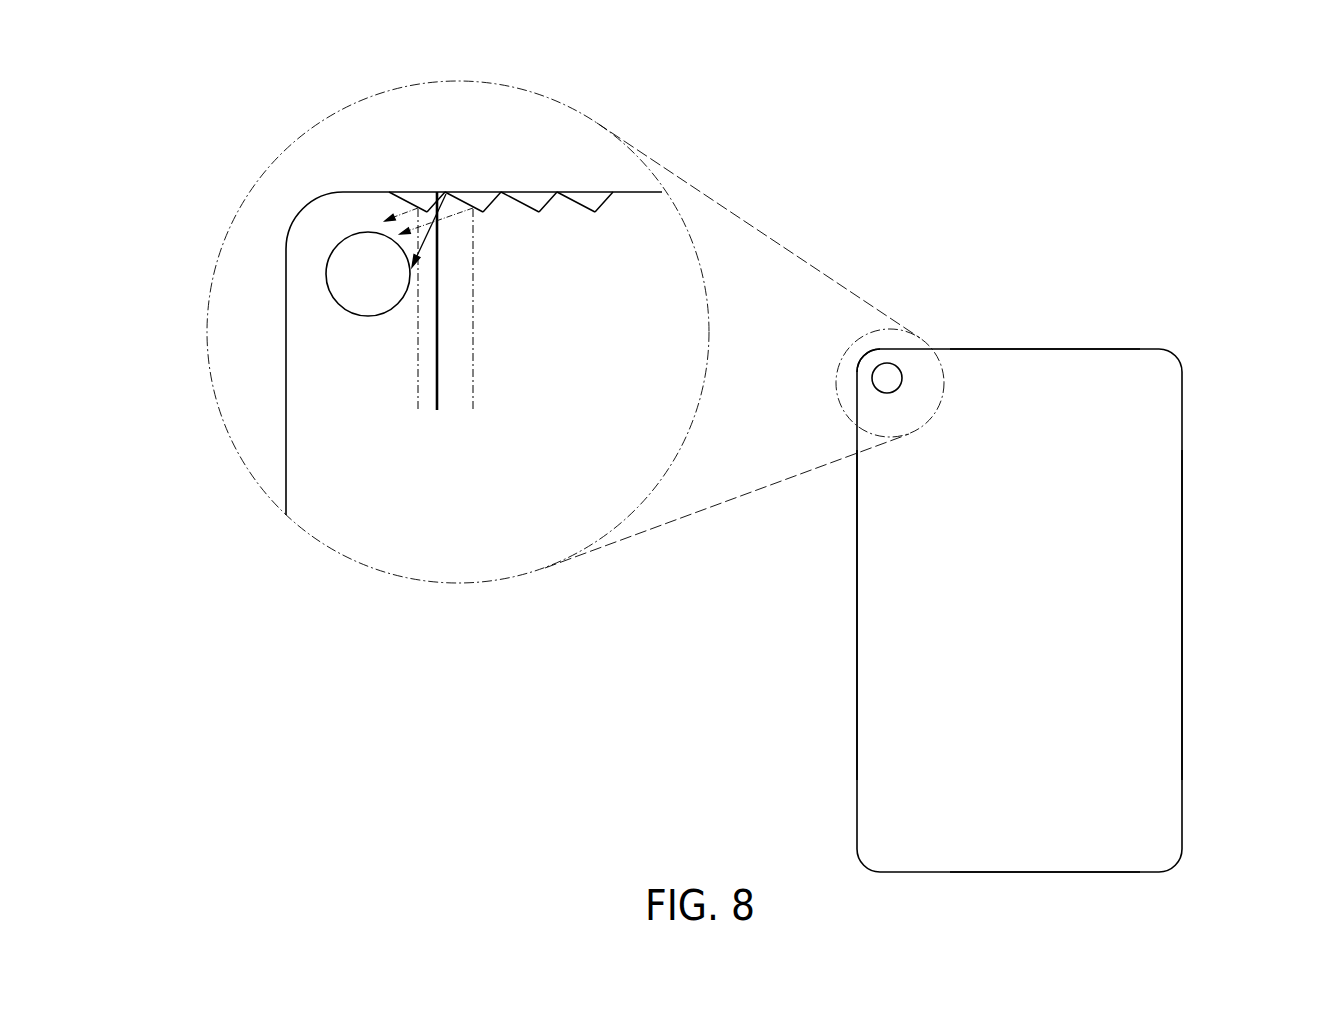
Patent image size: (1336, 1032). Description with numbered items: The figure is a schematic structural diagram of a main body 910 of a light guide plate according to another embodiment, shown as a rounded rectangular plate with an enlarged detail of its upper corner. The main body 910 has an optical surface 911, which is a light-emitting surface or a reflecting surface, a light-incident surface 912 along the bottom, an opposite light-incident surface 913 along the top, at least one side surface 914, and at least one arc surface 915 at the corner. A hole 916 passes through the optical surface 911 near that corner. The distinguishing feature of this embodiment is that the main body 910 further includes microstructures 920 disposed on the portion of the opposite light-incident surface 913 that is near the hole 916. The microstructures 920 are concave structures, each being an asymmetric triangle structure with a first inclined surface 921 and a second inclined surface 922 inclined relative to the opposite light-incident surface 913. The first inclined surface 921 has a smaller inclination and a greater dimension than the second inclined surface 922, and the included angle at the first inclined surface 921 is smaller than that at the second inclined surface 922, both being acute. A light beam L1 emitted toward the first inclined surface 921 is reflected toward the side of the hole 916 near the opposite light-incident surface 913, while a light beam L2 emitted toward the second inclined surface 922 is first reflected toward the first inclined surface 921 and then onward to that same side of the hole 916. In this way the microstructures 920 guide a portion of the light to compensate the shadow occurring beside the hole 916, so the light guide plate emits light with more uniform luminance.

The main body 910 is at (1172, 324).
The optical surface 911 is at (1160, 590).
The light-incident surface 912 is at (1137, 872).
The opposite light-incident surface 913 is at (1060, 349).
The side surface 914 is at (857, 672).
The arc surface 915 is at (862, 355).
The hole 916 is at (895, 375).
The microstructures 920 is at (502, 117).
The first inclined surface 921 is at (500, 207).
The second inclined surface 922 is at (557, 204).
The light beam L1 is at (418, 392).
The light beam L2 is at (437, 391).